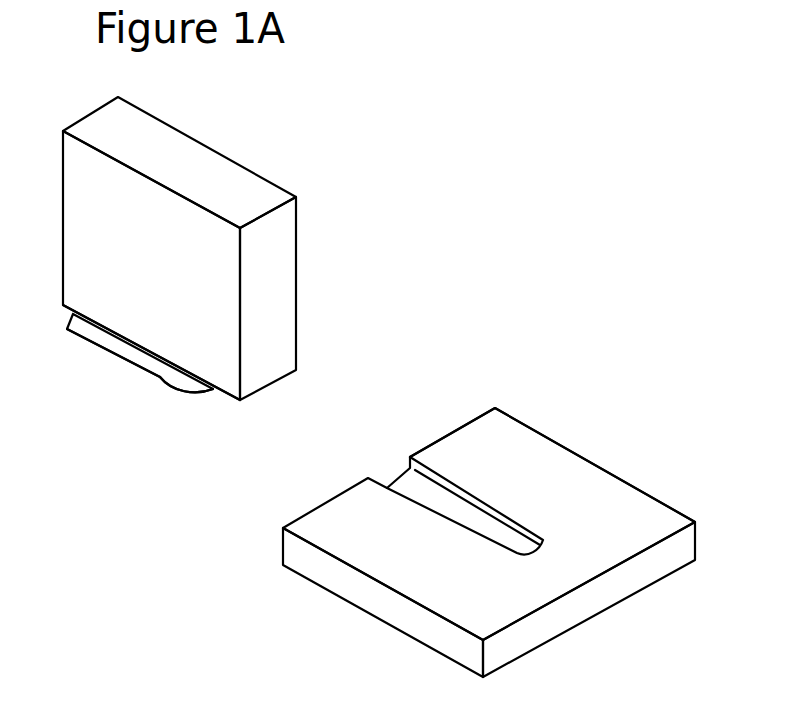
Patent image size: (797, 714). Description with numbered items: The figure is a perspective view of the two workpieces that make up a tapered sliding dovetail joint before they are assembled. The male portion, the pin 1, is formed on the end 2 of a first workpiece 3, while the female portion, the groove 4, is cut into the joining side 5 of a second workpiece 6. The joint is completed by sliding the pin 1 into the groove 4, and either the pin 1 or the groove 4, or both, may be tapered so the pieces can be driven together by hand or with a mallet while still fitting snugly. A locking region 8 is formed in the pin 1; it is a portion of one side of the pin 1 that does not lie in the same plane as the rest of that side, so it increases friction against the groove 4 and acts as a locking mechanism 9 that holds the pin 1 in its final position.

The pin 1 is at (140, 367).
The end 2 is at (280, 380).
The first workpiece 3 is at (275, 293).
The groove 4 is at (387, 470).
The joining side 5 is at (548, 455).
The second workpiece 6 is at (675, 492).
The locking region 8 is at (157, 378).
The locking mechanism 9 is at (162, 385).